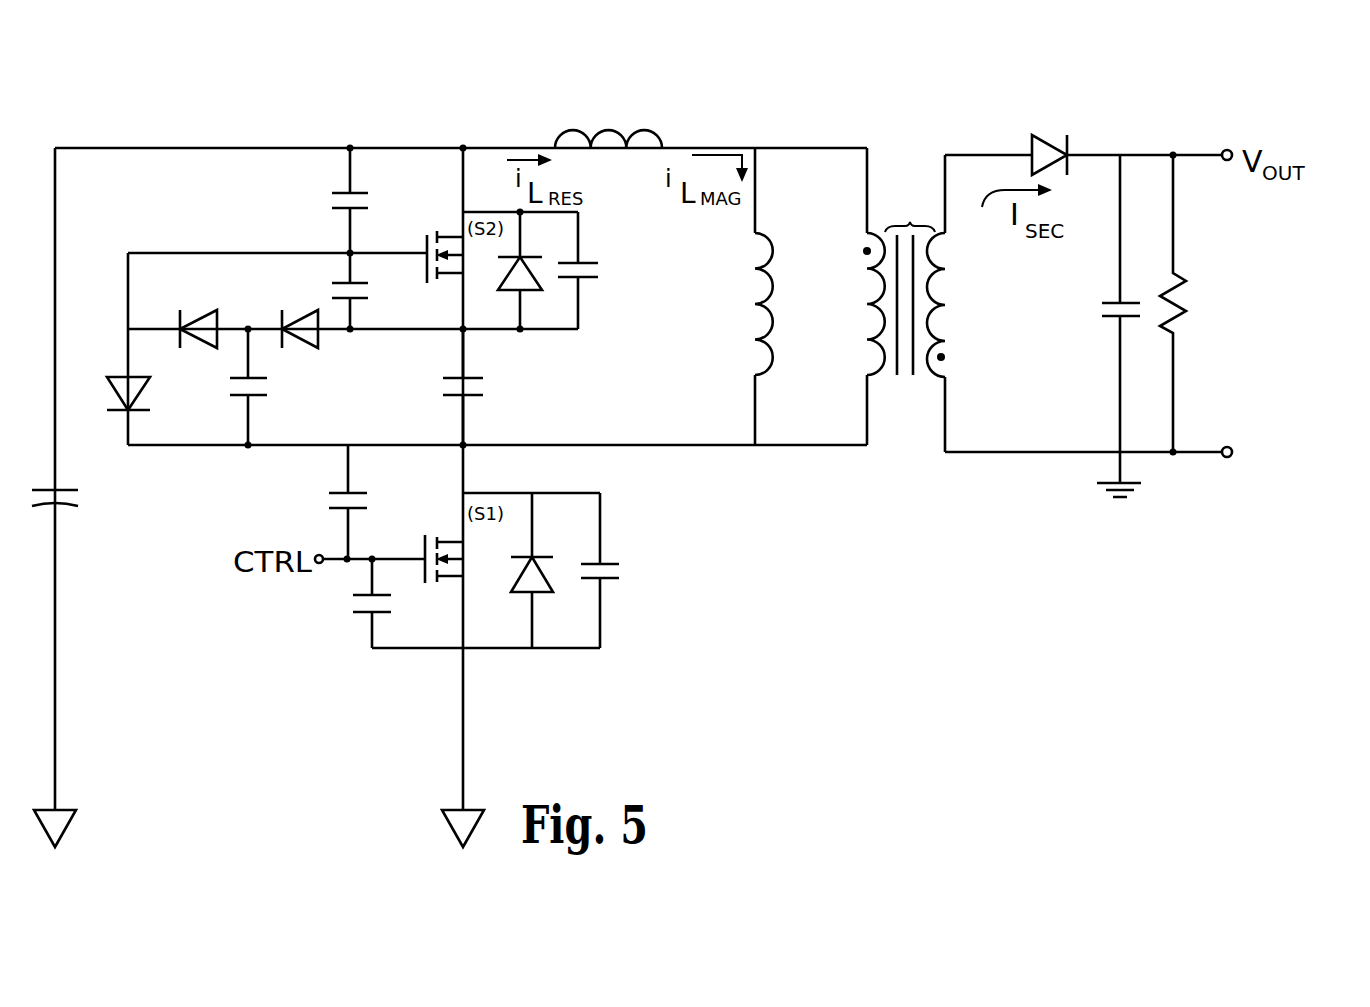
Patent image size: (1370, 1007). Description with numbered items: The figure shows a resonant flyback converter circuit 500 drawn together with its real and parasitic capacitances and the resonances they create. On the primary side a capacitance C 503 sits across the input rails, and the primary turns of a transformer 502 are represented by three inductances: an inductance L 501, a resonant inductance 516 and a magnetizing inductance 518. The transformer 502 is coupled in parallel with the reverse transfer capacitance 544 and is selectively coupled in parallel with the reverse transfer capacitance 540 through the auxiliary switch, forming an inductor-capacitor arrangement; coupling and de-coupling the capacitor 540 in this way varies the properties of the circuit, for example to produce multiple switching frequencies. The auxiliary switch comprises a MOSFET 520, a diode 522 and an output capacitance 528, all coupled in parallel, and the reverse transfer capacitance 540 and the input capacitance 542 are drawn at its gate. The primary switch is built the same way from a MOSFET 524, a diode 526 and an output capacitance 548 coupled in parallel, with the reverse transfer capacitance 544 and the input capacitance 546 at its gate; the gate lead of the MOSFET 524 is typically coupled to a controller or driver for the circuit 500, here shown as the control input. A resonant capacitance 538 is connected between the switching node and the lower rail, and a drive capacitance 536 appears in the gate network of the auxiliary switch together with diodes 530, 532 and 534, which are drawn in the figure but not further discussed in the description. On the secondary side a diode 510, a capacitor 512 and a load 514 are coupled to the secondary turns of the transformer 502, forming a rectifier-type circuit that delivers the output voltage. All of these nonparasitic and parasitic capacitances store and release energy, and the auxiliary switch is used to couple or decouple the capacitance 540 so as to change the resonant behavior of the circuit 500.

The circuit 500 is at (1255, 111).
The inductance L 501 is at (870, 304).
The transformer 502 is at (910, 224).
The capacitance C 503 is at (76, 490).
The diode 510 is at (1050, 134).
The capacitor 512 is at (1108, 312).
The load 514 is at (1190, 304).
The inductance LRES 516 is at (605, 130).
The inductance LMAG 518 is at (752, 273).
The MOSFET 520 is at (425, 240).
The diode 522 is at (502, 281).
The MOSFET 524 is at (425, 546).
The diode 526 is at (534, 552).
The capacitance Coss1 528 is at (600, 250).
The diode 530 is at (308, 320).
The diode 532 is at (208, 320).
The diode 534 is at (116, 376).
The capacitance CDV 536 is at (258, 398).
The capacitance CRES 538 is at (490, 366).
The capacitor Crss1 540 is at (346, 194).
The capacitance Ciss1 542 is at (352, 280).
The capacitor Crss2 544 is at (332, 494).
The capacitance Ciss2 546 is at (354, 598).
The capacitance Coss2 548 is at (602, 558).